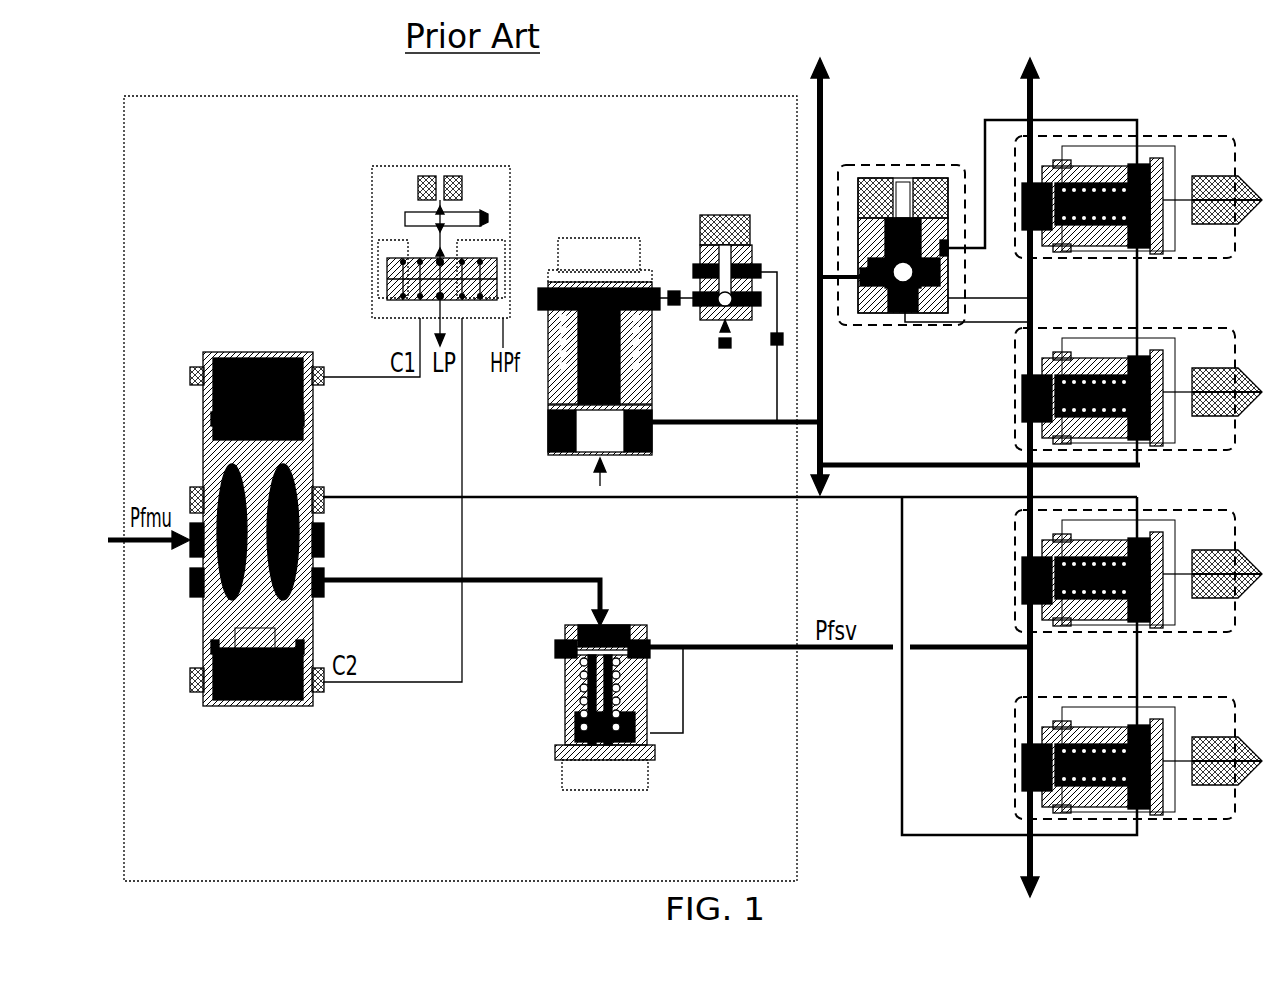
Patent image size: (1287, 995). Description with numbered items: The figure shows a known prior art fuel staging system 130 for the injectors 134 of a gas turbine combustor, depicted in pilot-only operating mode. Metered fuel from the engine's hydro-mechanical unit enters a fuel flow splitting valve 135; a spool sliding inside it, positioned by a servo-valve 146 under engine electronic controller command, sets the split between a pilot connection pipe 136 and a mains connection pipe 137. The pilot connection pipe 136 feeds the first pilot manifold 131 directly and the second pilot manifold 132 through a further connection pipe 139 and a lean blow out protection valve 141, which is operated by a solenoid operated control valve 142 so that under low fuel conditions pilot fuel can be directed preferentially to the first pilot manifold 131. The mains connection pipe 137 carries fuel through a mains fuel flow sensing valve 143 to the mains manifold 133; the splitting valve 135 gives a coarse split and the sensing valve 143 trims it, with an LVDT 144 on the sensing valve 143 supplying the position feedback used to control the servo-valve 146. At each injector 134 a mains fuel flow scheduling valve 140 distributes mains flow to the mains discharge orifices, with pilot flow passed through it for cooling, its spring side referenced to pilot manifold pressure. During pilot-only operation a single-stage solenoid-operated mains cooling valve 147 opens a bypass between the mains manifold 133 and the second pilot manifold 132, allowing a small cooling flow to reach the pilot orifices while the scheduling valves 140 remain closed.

The staging system 130 is at (946, 49).
The first pilot manifold 131 is at (905, 752).
The second pilot manifold 132 is at (823, 398).
The mains manifold 133 is at (1034, 665).
The fuel injectors 134 is at (1186, 136).
The fuel flow splitting valve 135 is at (204, 418).
The pilot connection pipe 136 is at (492, 500).
The mains connection pipe 137 is at (363, 583).
The further connection pipe 139 is at (692, 425).
The mains fuel flow scheduling valves 140 is at (1092, 172).
The lean blow out protection valve 141 is at (552, 368).
The solenoid operated control valve 142 is at (700, 255).
The mains fuel flow sensing valve 143 is at (560, 690).
The LVDT 144 is at (626, 787).
The servo-valve 146 is at (478, 165).
The mains cooling valve 147 is at (900, 165).